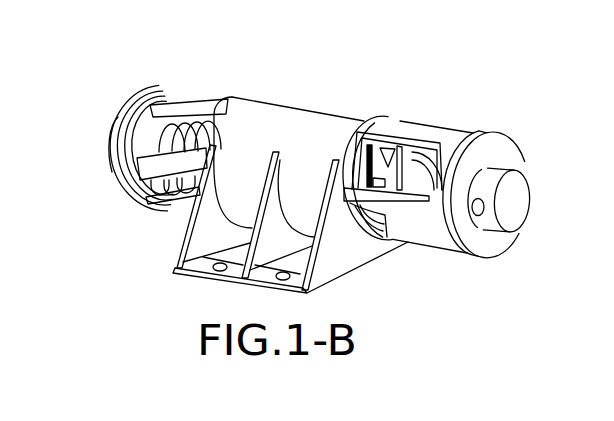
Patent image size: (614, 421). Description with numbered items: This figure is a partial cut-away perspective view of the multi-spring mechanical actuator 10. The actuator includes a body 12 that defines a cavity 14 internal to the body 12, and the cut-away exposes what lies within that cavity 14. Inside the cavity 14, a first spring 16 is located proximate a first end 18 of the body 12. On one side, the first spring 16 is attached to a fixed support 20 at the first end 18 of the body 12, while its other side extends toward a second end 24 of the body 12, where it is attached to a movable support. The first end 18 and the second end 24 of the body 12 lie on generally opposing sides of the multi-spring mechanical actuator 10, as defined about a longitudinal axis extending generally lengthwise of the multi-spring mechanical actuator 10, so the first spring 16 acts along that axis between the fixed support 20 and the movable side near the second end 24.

The multi-spring mechanical actuator 10 is at (366, 87).
The body 12 is at (410, 244).
The cavity 14 is at (173, 105).
The first spring 16 is at (203, 113).
The first end 18 is at (98, 128).
The fixed support 20 is at (124, 197).
The second end 24 is at (538, 143).